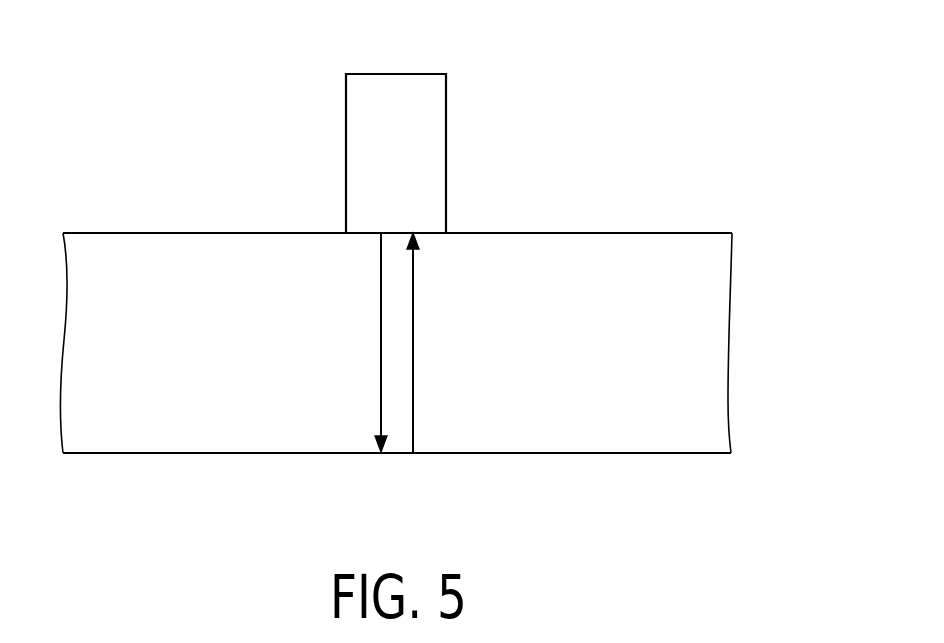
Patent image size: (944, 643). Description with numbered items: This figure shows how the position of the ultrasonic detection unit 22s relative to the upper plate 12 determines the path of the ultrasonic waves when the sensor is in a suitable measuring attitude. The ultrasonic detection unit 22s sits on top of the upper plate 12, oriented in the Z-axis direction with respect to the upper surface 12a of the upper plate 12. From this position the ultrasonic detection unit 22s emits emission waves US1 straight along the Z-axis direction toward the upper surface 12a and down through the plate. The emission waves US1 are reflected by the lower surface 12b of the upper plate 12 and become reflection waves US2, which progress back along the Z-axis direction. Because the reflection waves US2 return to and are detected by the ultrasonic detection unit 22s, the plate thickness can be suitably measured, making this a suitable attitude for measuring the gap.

The upper plate 12 is at (639, 258).
The upper surface of the upper plate 12a is at (587, 233).
The lower surface of the upper plate 12b is at (587, 453).
The ultrasonic detection unit 22s is at (397, 92).
The emission waves US1 is at (381, 337).
The reflection waves US2 is at (413, 362).